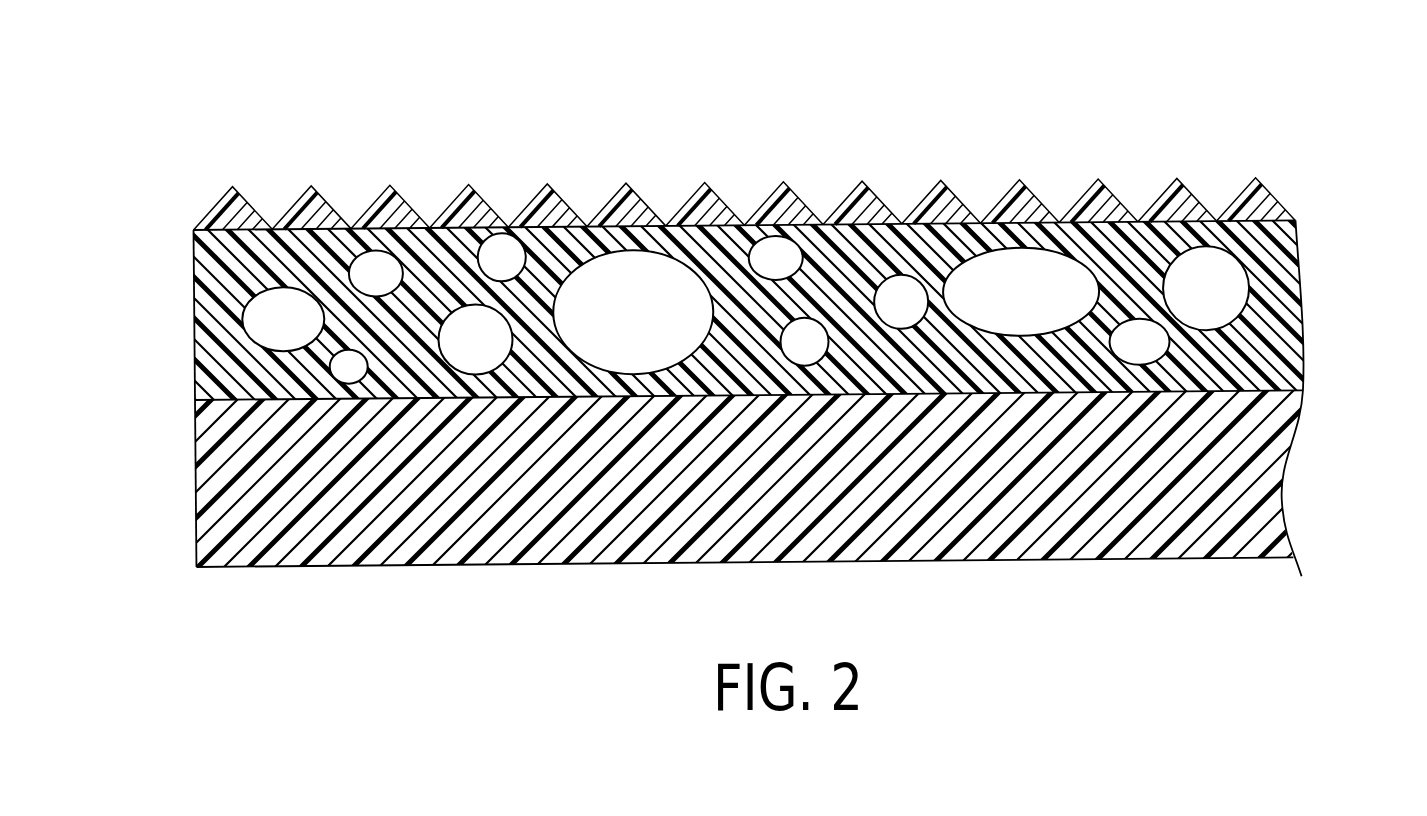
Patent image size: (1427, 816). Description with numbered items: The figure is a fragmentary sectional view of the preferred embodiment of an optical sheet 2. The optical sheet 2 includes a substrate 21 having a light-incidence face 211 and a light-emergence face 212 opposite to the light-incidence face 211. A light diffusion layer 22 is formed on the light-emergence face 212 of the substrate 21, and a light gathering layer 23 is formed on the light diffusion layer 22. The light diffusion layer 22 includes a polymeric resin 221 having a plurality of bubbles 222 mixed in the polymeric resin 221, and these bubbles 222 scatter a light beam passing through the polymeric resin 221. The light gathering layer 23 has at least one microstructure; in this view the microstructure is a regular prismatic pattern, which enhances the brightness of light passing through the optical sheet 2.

The optical sheet 2 is at (718, 378).
The substrate 21 is at (726, 458).
The light-incidence face 211 is at (1135, 558).
The light-emergence face 212 is at (1180, 397).
The light diffusion layer 22 is at (718, 435).
The polymeric resin 221 is at (1260, 360).
The bubbles 222 is at (1230, 282).
The light gathering layer 23 is at (1058, 163).